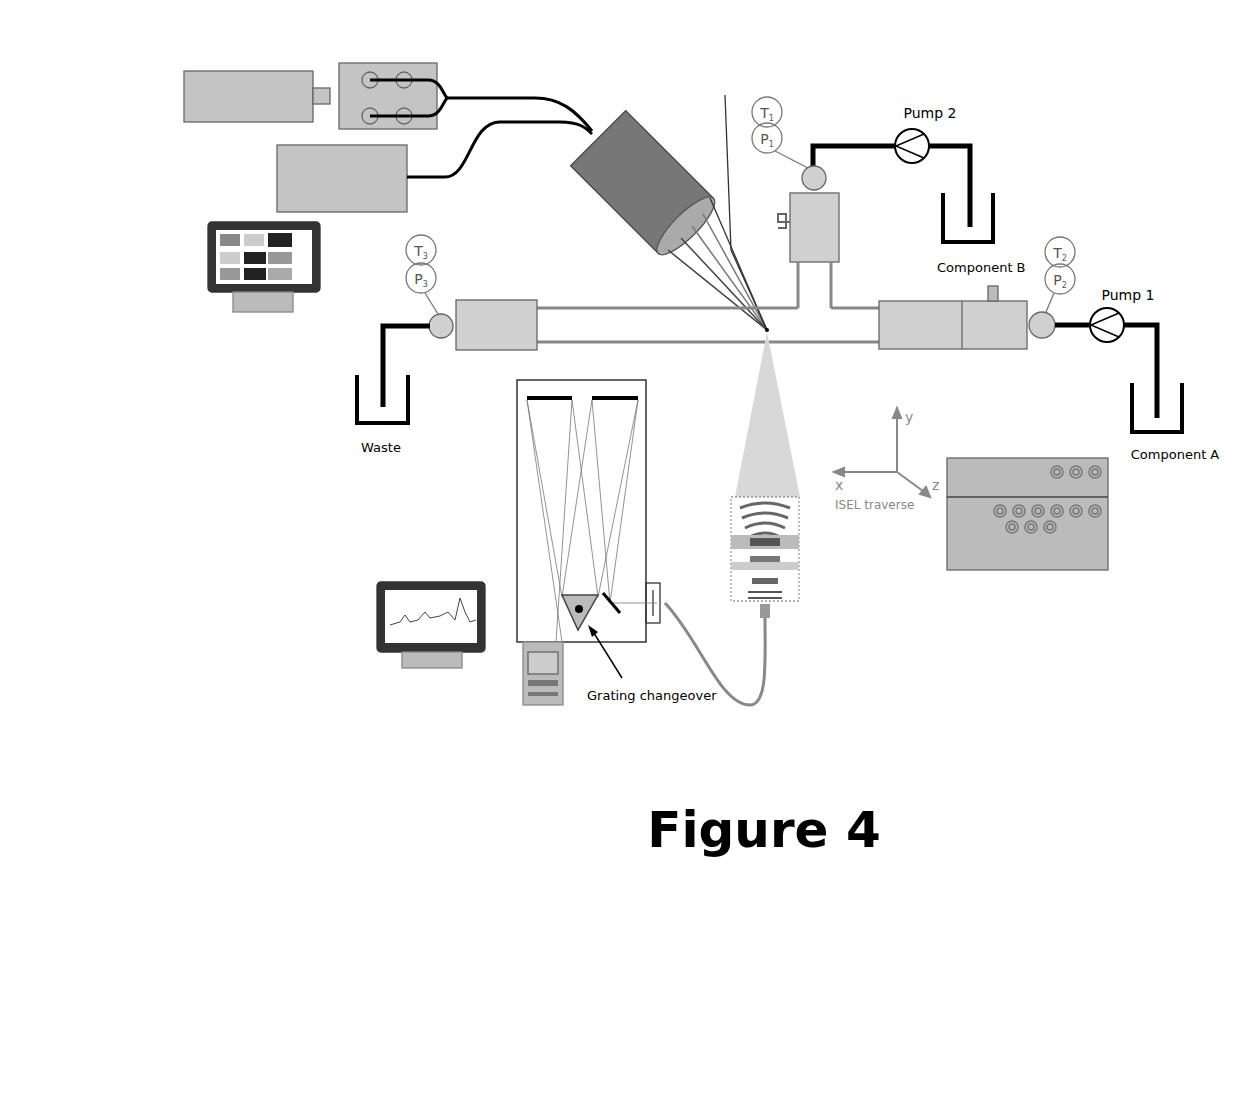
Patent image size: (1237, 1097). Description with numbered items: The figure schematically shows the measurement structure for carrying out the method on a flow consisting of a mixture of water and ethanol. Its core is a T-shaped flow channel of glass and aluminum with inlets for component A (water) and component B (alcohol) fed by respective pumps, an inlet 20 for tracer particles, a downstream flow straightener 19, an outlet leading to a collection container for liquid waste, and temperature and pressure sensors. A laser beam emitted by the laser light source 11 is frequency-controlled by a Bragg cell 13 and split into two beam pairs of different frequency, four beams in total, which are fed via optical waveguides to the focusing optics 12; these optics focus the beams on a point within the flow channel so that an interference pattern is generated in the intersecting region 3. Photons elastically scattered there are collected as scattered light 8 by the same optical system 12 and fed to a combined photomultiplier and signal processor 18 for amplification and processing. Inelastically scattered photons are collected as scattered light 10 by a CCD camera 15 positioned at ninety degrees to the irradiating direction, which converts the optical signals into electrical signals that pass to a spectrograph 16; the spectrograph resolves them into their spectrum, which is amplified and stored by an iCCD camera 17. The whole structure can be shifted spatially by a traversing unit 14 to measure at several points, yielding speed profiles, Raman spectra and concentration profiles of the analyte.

The intersecting region 3 is at (765, 333).
The scattered light 8 is at (705, 260).
The scattered light 10 is at (770, 402).
The laser light source 11 is at (257, 96).
The focusing optics 12 is at (643, 172).
The Bragg cell 13 is at (352, 77).
The traversing unit 14 is at (997, 553).
The CCD camera 15 is at (792, 542).
The spectrograph 16 is at (523, 570).
The iCCD camera 17 is at (543, 708).
The combined photomultiplier and signal processor 18 is at (342, 178).
The flow straightener 19 is at (953, 325).
The inlet 20 is at (986, 289).